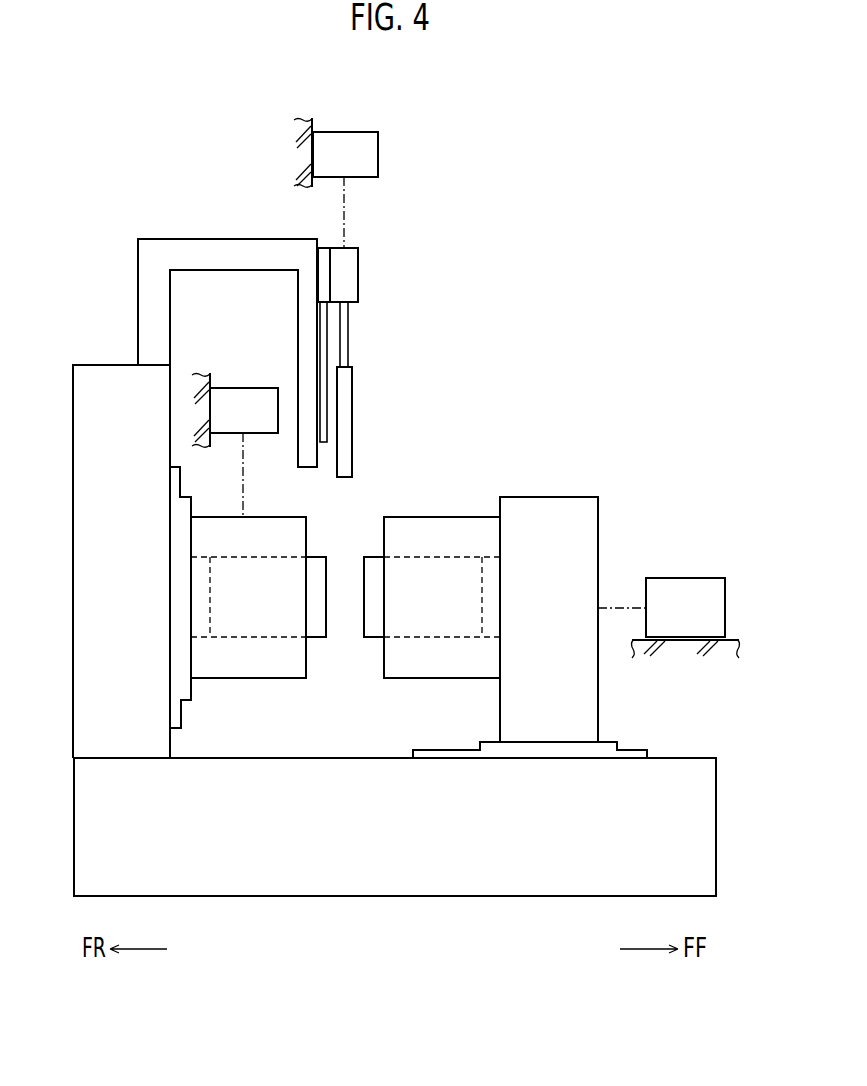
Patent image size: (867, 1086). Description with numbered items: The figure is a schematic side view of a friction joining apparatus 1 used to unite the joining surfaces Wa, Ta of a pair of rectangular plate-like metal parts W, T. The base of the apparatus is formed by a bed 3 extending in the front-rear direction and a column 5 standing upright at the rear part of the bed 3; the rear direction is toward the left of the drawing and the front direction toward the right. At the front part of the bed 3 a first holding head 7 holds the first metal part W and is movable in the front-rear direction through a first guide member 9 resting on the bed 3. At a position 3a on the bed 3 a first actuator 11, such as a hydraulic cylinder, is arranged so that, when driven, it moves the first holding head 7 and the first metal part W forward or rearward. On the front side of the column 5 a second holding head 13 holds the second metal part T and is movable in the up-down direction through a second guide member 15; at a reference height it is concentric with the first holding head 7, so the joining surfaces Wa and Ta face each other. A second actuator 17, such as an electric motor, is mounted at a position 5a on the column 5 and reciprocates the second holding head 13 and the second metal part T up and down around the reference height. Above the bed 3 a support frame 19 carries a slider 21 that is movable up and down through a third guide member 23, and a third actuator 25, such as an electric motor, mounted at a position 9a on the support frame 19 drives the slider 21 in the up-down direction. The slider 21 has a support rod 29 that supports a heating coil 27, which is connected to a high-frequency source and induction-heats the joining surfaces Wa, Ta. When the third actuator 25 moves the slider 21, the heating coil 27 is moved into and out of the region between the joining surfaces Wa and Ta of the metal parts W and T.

The friction joining apparatus 1 is at (477, 296).
The bed 3 is at (393, 897).
The proper position on the bed 3a is at (687, 645).
The column 5 is at (85, 550).
The fixed support portion 5a is at (220, 372).
The first holding head 7 is at (474, 517).
The first guide member 9 is at (633, 748).
The fixed support portion 9a is at (312, 122).
The first actuator 11 is at (688, 578).
The second holding head 13 is at (270, 517).
The second guide member 15 is at (180, 485).
The second actuator 17 is at (250, 388).
The support frame 19 is at (230, 239).
The slider 21 is at (359, 270).
The third guide member 23 is at (320, 317).
The third actuator 25 is at (378, 156).
The heating coil 27 is at (352, 414).
The support rod 29 is at (349, 332).
The second metal part T is at (325, 553).
The joining surface of the second metal part Ta is at (326, 620).
The first metal part W is at (374, 553).
The joining surface of the first metal part Wa is at (364, 620).